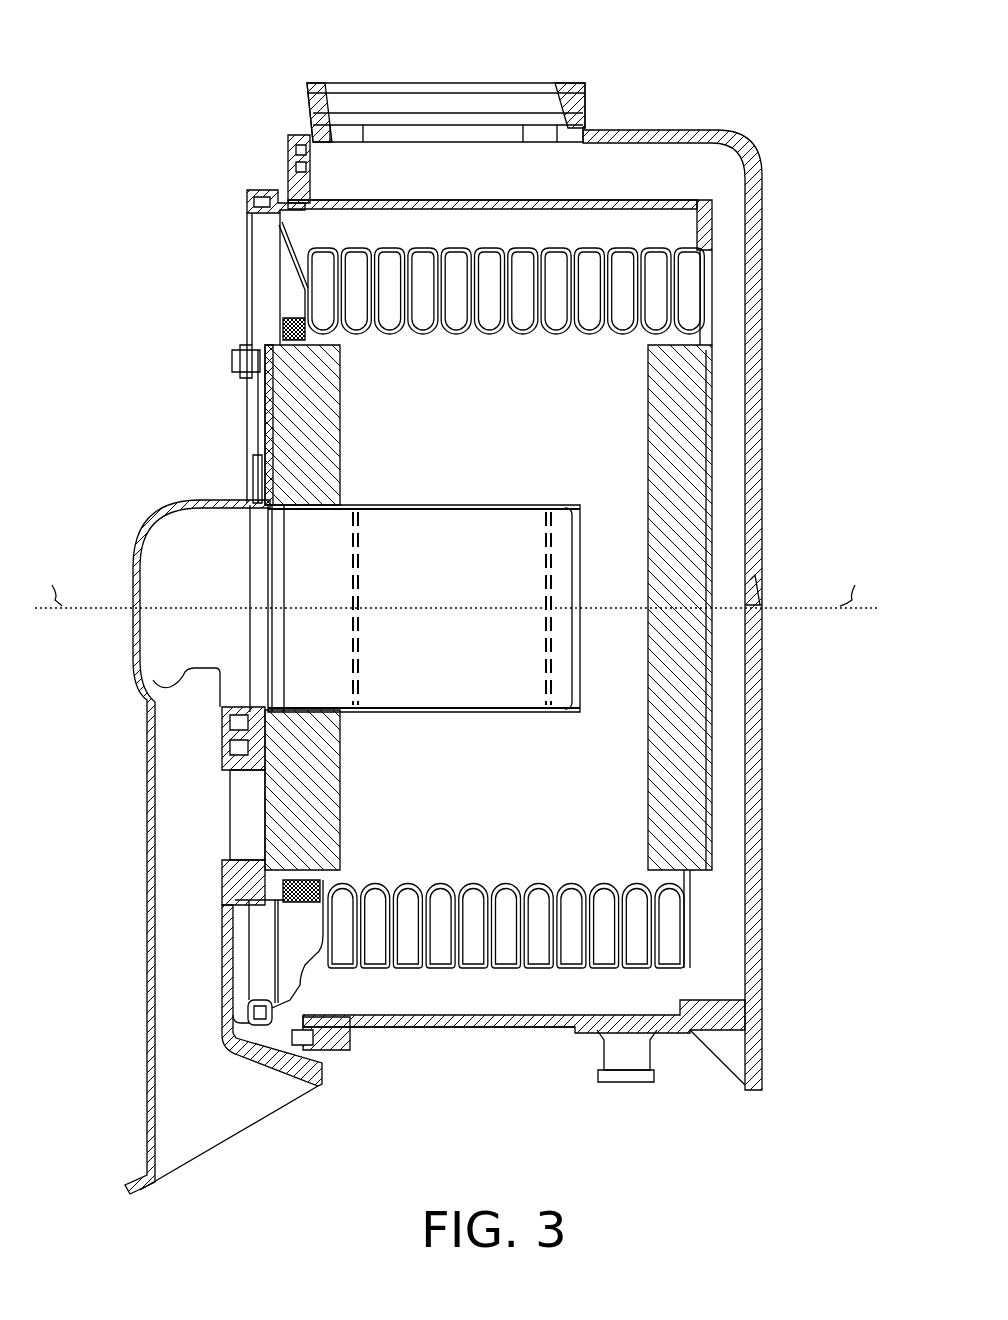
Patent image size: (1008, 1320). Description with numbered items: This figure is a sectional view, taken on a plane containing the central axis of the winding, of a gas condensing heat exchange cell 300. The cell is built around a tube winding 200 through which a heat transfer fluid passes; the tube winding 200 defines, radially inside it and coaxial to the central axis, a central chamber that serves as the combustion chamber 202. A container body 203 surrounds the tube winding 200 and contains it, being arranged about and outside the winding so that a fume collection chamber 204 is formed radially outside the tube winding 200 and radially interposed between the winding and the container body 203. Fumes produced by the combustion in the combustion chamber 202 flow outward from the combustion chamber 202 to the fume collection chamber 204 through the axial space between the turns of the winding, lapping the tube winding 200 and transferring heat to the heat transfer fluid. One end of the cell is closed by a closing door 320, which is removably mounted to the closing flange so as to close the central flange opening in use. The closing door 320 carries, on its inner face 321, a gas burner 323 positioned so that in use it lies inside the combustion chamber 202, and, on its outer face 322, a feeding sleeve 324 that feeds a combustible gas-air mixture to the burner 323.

The gas condensing heat exchange cell 300 is at (762, 88).
The tube winding 200 is at (590, 232).
The combustion chamber 202 is at (470, 430).
The container body 203 is at (515, 1022).
The fume collection chamber 204 is at (318, 225).
The closing door 320 is at (278, 232).
The inner face 321 is at (265, 423).
The outer face 322 is at (255, 473).
The gas burner 323 is at (500, 712).
The feeding sleeve 324 is at (148, 893).